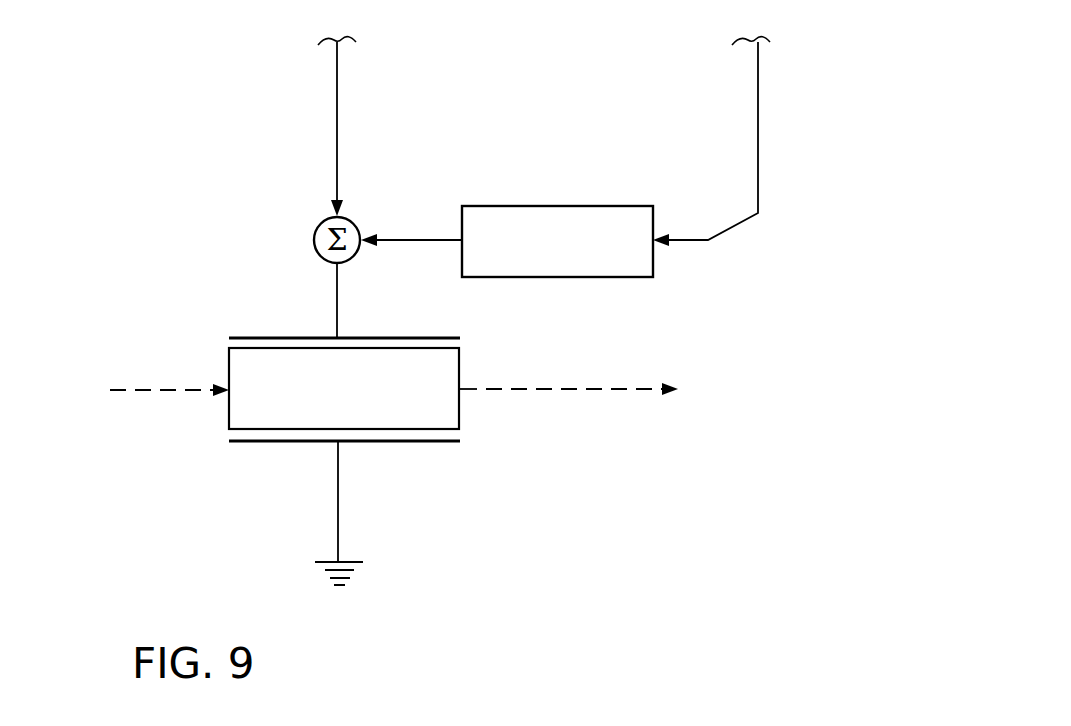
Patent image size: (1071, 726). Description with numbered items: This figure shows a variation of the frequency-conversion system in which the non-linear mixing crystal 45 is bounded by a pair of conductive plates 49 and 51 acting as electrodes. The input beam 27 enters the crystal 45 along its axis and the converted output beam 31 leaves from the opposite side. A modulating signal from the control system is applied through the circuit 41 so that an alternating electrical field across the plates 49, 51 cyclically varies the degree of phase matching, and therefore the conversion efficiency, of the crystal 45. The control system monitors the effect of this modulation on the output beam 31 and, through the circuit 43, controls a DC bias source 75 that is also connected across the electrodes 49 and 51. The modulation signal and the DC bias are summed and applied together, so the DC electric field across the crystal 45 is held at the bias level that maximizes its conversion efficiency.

The input beam 27 is at (152, 390).
The output beam 31 is at (597, 392).
The circuit 41 is at (335, 155).
The circuit 43 is at (760, 113).
The non-linear mixing crystal 45 is at (412, 407).
The conductive plate 49 is at (410, 337).
The conductive plate 51 is at (272, 441).
The DC bias source 75 is at (530, 213).